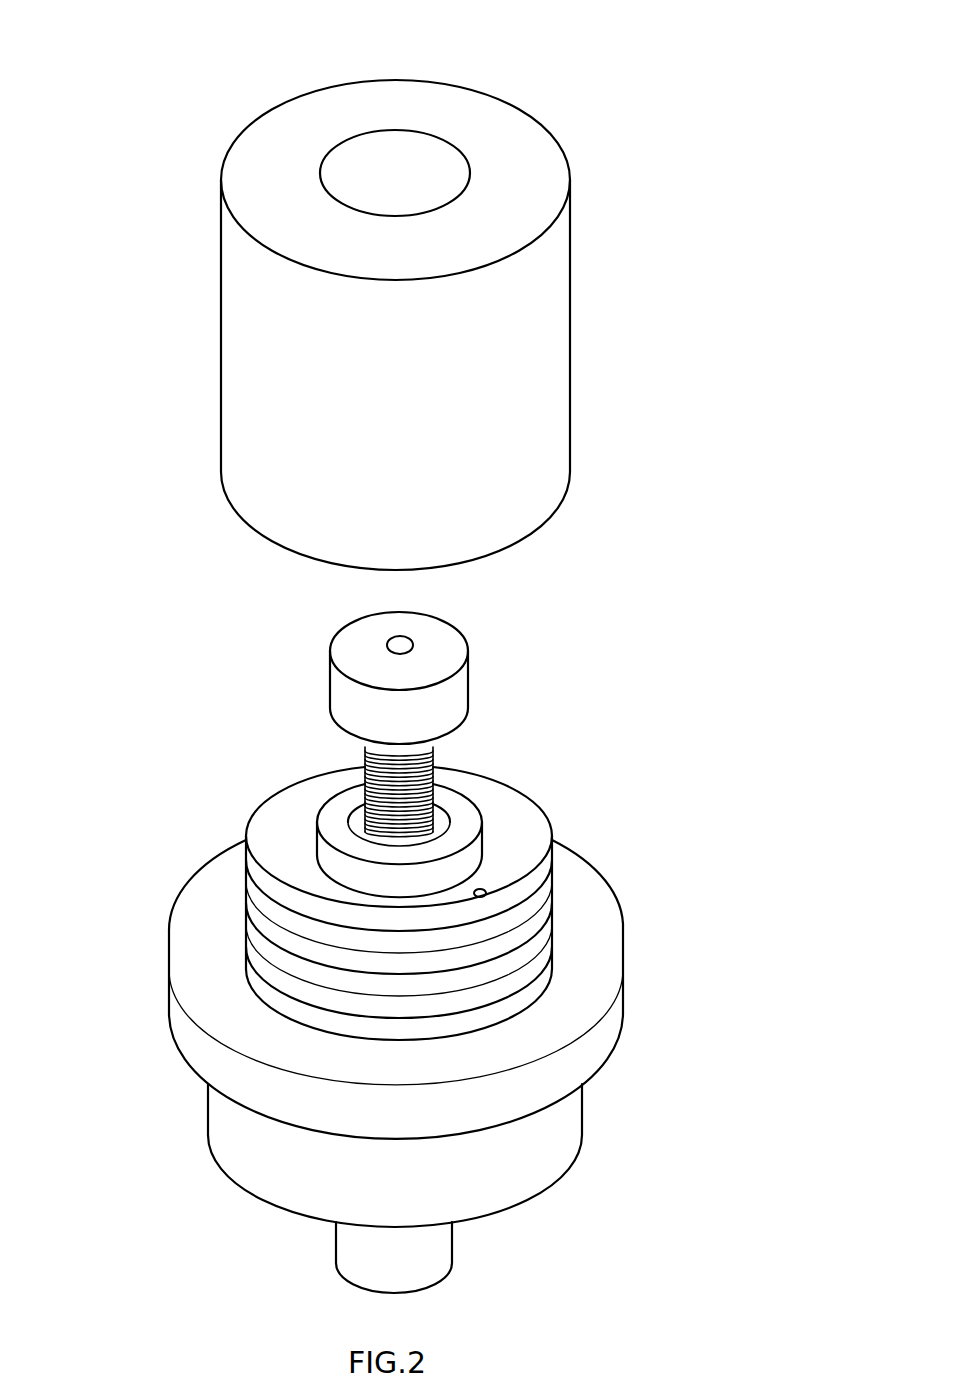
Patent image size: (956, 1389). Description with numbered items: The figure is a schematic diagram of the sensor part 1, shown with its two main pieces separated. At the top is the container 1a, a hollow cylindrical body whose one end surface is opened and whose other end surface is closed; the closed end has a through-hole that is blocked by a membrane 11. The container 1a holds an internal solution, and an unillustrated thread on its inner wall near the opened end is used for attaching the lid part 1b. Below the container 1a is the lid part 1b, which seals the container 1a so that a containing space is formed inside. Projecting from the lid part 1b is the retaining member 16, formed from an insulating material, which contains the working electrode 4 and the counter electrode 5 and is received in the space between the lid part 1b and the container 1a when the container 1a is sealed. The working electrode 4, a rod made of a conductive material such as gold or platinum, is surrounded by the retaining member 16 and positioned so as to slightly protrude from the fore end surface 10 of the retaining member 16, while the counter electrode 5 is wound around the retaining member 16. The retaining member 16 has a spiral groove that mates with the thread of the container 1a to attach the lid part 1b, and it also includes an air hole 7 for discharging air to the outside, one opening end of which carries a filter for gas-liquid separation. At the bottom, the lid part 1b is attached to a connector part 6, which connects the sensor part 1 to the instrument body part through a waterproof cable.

The sensor part 1 is at (732, 93).
The container 1a is at (172, 128).
The lid part 1b is at (157, 877).
The working electrode 4 is at (415, 645).
The counter electrode 5 is at (437, 777).
The connector part 6 is at (455, 1243).
The air hole 7 is at (487, 889).
The fore end surface 10 is at (355, 647).
The membrane 11 is at (425, 157).
The retaining member 16 is at (268, 801).